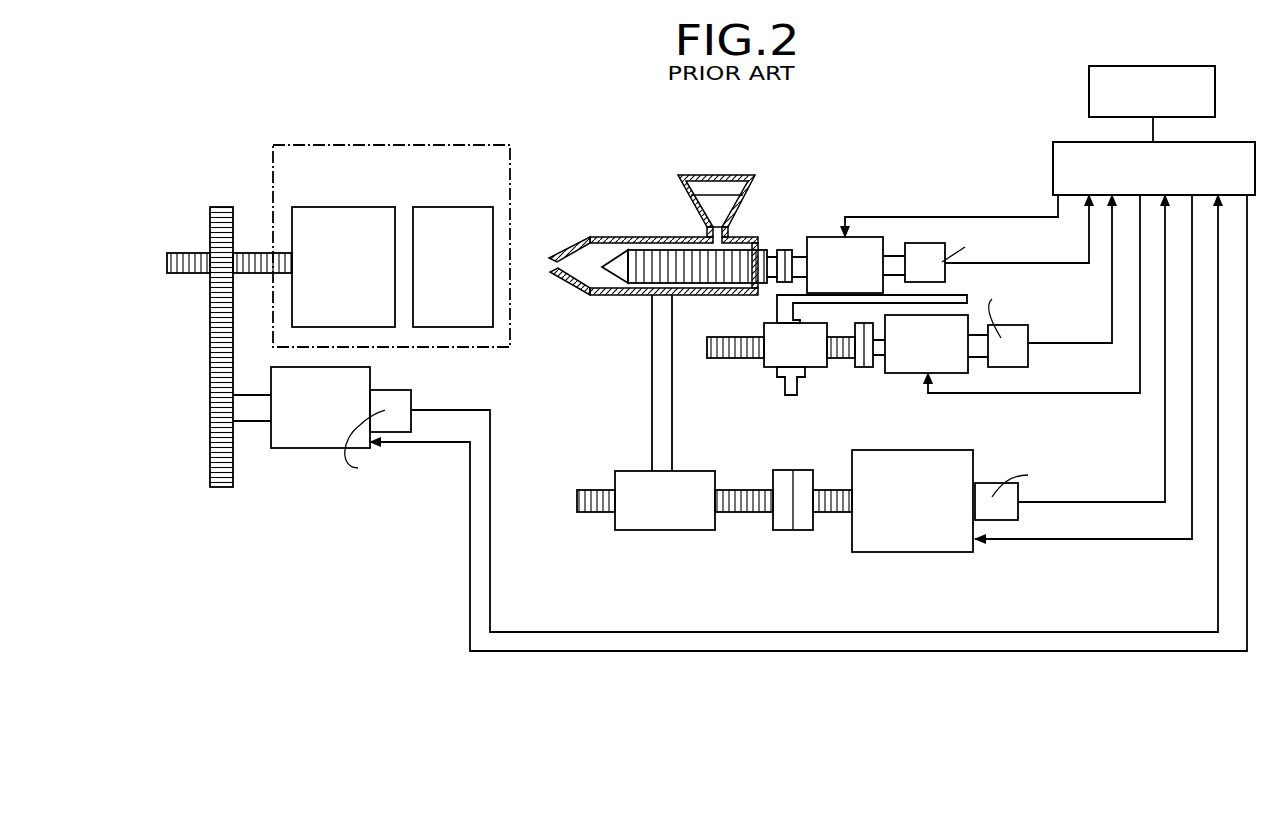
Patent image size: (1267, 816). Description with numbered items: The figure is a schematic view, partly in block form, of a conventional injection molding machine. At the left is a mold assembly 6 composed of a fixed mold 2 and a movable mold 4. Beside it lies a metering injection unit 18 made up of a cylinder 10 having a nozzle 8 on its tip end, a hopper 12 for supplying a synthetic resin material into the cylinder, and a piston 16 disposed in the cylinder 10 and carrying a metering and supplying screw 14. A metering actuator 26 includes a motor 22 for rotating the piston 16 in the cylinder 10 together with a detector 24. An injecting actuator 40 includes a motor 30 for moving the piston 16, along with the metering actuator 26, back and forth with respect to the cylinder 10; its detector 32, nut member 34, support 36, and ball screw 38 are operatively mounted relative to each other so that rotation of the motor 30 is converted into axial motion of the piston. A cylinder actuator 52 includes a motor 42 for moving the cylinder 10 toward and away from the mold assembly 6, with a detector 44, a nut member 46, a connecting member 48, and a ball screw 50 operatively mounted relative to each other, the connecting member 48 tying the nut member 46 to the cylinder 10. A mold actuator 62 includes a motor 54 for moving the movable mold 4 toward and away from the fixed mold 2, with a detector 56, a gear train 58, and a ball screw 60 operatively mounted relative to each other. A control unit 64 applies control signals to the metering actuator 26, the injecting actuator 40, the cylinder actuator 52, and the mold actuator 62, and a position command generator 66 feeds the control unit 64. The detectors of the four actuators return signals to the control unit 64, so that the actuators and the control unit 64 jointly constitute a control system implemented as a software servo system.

The fixed mold 2 is at (451, 207).
The movable mold 4 is at (340, 207).
The mold assembly 6 is at (408, 145).
The nozzle 8 is at (556, 254).
The cylinder 10 is at (590, 238).
The hopper 12 is at (690, 185).
The metering and supplying screw 14 is at (668, 255).
The piston 16 is at (633, 250).
The metering injection unit 18 is at (718, 167).
The motor 22 is at (827, 246).
The detector 24 is at (935, 262).
The metering actuator 26 is at (888, 172).
The motor 30 is at (908, 368).
The detector 32 is at (1012, 366).
The nut member 34 is at (817, 358).
The support 36 is at (890, 296).
The ball screw 38 is at (748, 358).
The injecting actuator 40 is at (718, 376).
The motor 42 is at (932, 542).
The detector 44 is at (1000, 518).
The nut member 46 is at (688, 522).
The connecting member 48 is at (652, 398).
The ball screw 50 is at (760, 512).
The cylinder actuator 52 is at (631, 556).
The motor 54 is at (353, 382).
The detector 56 is at (402, 402).
The gear train 58 is at (200, 353).
The ball screw 60 is at (190, 274).
The mold actuator 62 is at (348, 505).
The control unit 64 is at (1075, 142).
The position command generator 66 is at (1148, 66).